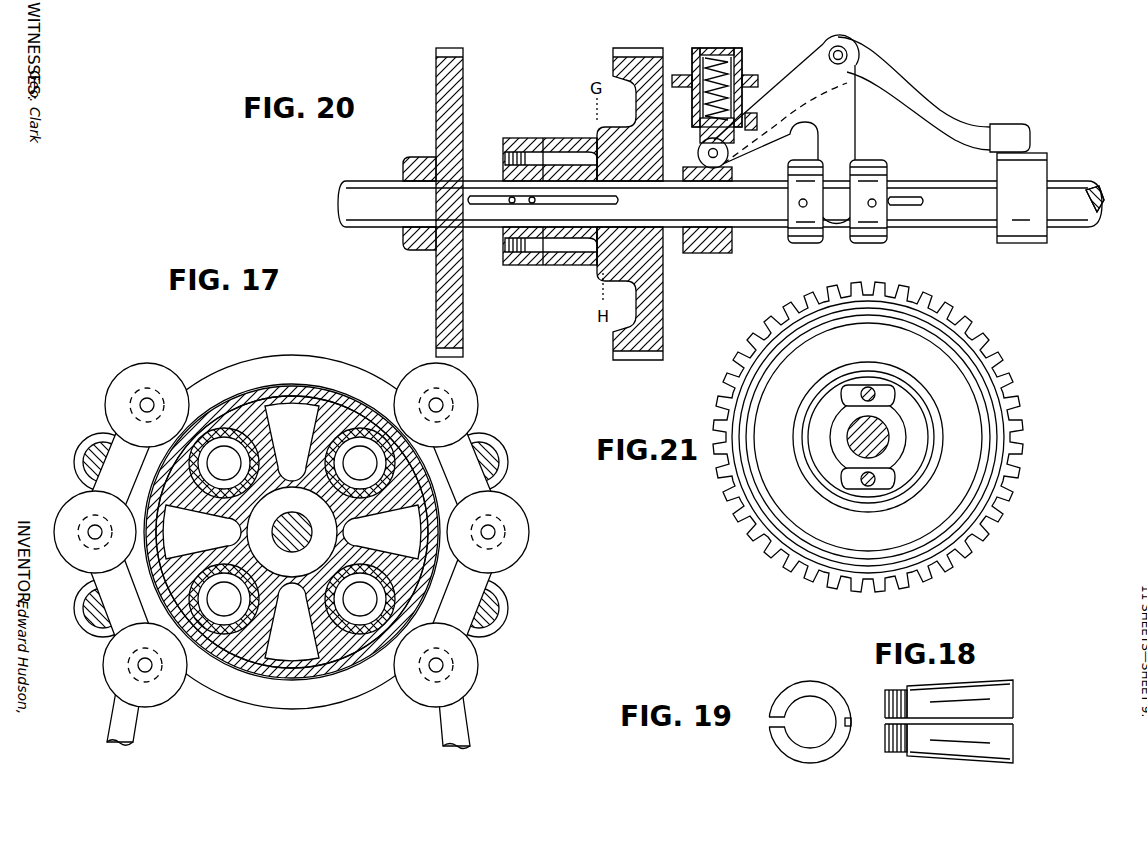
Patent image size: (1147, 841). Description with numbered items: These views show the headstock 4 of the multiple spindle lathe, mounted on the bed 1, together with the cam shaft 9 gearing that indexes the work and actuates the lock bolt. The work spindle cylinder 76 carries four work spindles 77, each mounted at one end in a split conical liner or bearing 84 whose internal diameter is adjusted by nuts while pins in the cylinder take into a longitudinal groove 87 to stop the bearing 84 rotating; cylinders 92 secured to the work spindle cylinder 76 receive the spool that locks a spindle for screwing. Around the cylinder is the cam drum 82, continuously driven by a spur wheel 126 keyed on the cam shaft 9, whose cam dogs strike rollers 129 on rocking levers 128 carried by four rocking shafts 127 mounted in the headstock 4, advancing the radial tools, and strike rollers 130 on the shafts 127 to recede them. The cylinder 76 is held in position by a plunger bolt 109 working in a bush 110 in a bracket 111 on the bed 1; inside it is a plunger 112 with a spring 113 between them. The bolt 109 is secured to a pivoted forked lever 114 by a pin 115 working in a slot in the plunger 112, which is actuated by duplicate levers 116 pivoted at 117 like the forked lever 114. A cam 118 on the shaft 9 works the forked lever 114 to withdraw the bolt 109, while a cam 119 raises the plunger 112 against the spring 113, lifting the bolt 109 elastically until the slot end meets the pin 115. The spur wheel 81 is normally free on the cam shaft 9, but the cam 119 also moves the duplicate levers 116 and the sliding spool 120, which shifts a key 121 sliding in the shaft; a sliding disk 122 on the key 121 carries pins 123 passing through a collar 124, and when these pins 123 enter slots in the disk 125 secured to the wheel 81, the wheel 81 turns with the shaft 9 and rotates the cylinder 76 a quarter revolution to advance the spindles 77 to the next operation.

In FIG. 17, the bed 1 is at (120, 722).
In FIG. 17, the headstock 4 is at (247, 358).
In FIG. 21, the cam shaft 9 is at (885, 450).
In FIG. 17, the work spindle cylinder 76 is at (258, 420).
In FIG. 17, the work spindles 77 is at (372, 436).
In FIG. 20, the spur wheel 81 is at (644, 360).
In FIG. 21, the spur wheel 81 is at (908, 355).
In FIG. 17, the cam drum 82 is at (308, 392).
In FIG. 19, the conical liner or bearing 84 is at (805, 688).
In FIG. 18, the conical liner or bearing 84 is at (968, 684).
In FIG. 19, the longitudinal groove 87 is at (852, 716).
In FIG. 17, the cylinders 92 is at (352, 410).
In FIG. 20, the plunger bolt 109 is at (716, 50).
In FIG. 20, the bush 110 is at (702, 52).
In FIG. 20, the bracket 111 is at (690, 65).
In FIG. 20, the plunger 112 is at (750, 75).
In FIG. 20, the spring 113 is at (752, 112).
In FIG. 20, the forked lever 114 is at (802, 62).
In FIG. 20, the pin 115 is at (698, 153).
In FIG. 20, the duplicate levers 116 is at (832, 135).
In FIG. 20, the pivot 117 is at (849, 53).
In FIG. 20, the cam 118 is at (1020, 160).
In FIG. 20, the cam 119 is at (718, 240).
In FIG. 20, the sliding spool 120 is at (876, 230).
In FIG. 20, the sliding key 121 is at (773, 202).
In FIG. 21, the sliding key 121 is at (890, 437).
In FIG. 20, the sliding disk 122 is at (525, 265).
In FIG. 20, the pins 123 is at (543, 145).
In FIG. 21, the pins 123 is at (866, 488).
In FIG. 20, the collar 124 is at (586, 145).
In FIG. 20, the disk 125 is at (622, 270).
In FIG. 21, the disk 125 is at (812, 448).
In FIG. 20, the spur wheel 126 is at (452, 80).
In FIG. 17, the rocking shafts 127 is at (102, 432).
In FIG. 17, the rocking lever 128 is at (134, 410).
In FIG. 17, the rollers 129 is at (78, 528).
In FIG. 17, the rollers 130 is at (153, 377).